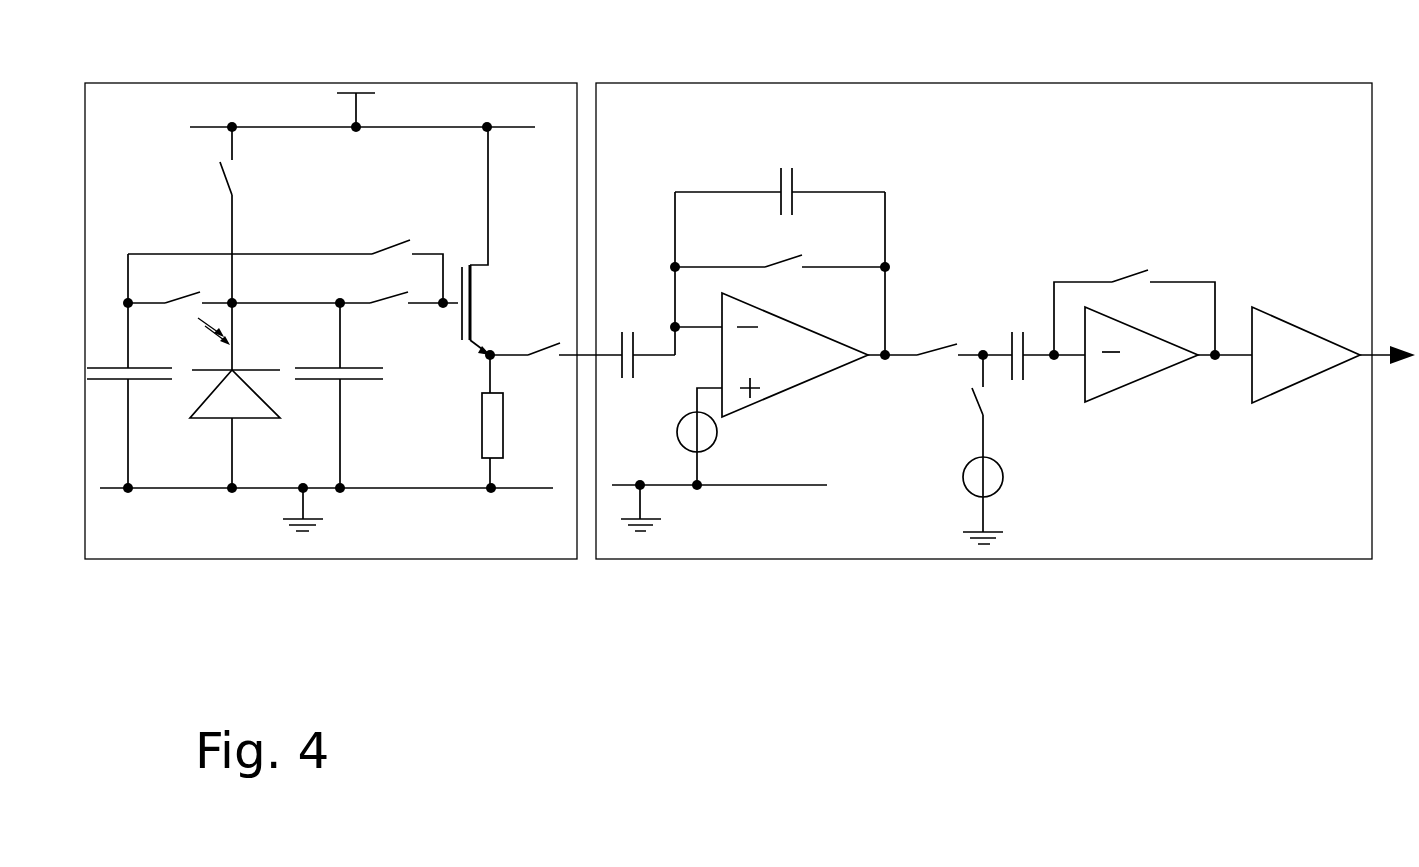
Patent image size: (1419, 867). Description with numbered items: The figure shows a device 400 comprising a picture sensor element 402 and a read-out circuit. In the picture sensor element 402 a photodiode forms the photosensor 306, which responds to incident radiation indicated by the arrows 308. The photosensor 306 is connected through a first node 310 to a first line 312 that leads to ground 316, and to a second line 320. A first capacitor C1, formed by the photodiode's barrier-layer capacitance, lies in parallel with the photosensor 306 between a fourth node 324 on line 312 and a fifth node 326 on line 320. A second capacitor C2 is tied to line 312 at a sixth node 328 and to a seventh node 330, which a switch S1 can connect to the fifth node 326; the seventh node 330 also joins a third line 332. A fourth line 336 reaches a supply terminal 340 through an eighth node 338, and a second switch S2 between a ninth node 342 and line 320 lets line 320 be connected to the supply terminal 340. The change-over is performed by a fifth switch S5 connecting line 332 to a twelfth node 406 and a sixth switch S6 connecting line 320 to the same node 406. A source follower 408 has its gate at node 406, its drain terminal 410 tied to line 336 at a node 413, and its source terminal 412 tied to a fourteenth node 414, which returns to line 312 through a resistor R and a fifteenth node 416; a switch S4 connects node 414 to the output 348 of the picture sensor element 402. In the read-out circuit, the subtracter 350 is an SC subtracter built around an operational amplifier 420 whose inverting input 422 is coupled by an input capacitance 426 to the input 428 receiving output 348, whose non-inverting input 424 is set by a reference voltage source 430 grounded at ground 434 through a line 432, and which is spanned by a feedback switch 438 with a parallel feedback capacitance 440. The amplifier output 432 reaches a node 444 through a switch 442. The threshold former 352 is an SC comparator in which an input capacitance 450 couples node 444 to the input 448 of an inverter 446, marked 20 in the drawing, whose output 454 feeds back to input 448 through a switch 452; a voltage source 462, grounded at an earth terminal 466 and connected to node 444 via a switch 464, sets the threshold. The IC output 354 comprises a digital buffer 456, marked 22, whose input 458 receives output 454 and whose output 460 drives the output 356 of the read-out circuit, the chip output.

The photosensor 306 is at (247, 419).
The arrows 308 is at (198, 322).
The first node 310 is at (232, 492).
The first line 312 is at (405, 487).
The ground 316 is at (308, 530).
The second line 320 is at (300, 306).
The fourth node 324 is at (342, 490).
The fifth node 326 is at (325, 302).
The sixth node 328 is at (128, 492).
The seventh node 330 is at (128, 306).
The third line 332 is at (298, 253).
The fourth line 336 is at (205, 126).
The eighth node 338 is at (360, 130).
The supply terminal 340 is at (360, 115).
The ninth node 342 is at (242, 126).
The output of the picture sensor element 348 is at (565, 358).
The subtracter 350 is at (874, 148).
The threshold former 352 is at (1214, 213).
The IC output 354 is at (1306, 426).
The output of the read-out circuit 356 is at (1375, 352).
The device 400 is at (577, 684).
The picture sensor element 402 is at (303, 562).
The twelfth node 406 is at (443, 306).
The source follower 408 is at (494, 296).
The drain terminal 410 is at (490, 262).
The source terminal 412 is at (485, 340).
The supply line 413 is at (487, 126).
The fourteenth node 414 is at (492, 357).
The fifteenth node 416 is at (492, 490).
The operational amplifier 420 is at (800, 385).
The inverting input 422 is at (688, 330).
The non-inverting input 424 is at (697, 392).
The input capacitance 426 is at (622, 333).
The input of the read-out circuit 428 is at (618, 357).
The reference voltage source 430 is at (715, 440).
The line 432 is at (760, 487).
The ground 434 is at (650, 525).
The feedback switch 438 is at (785, 258).
The feedback capacitance 440 is at (790, 168).
The switch 442 is at (948, 345).
The node 444 is at (982, 352).
The inverter 446 is at (1145, 378).
The input of the inverter 448 is at (1068, 357).
The input capacitance 450 is at (1022, 332).
The switch 452 is at (1132, 273).
The output of the inverter 454 is at (1212, 358).
The digital buffer 456 is at (1285, 318).
The input of the buffer 458 is at (1235, 358).
The output of the buffer 460 is at (1365, 358).
The voltage source 462 is at (1003, 480).
The switch 464 is at (980, 408).
The earth terminal 466 is at (1000, 540).
The switch S1 is at (172, 300).
The second switch S2 is at (232, 183).
The fourth switch S4 is at (540, 347).
The fifth switch S5 is at (395, 242).
The sixth switch S6 is at (378, 300).
The first capacitor C1 is at (339, 395).
The second capacitor C2 is at (129, 395).
The resistor R is at (485, 421).
The amplifier 20 is at (1148, 353).
The amplifier 22 is at (1288, 358).